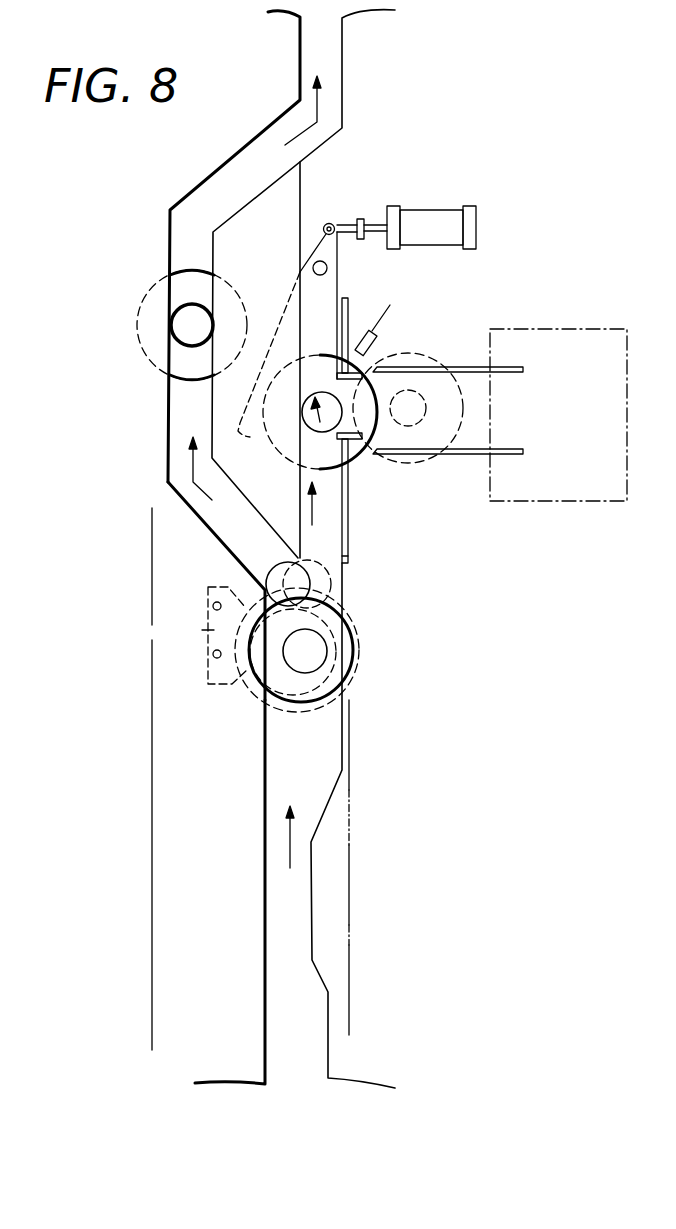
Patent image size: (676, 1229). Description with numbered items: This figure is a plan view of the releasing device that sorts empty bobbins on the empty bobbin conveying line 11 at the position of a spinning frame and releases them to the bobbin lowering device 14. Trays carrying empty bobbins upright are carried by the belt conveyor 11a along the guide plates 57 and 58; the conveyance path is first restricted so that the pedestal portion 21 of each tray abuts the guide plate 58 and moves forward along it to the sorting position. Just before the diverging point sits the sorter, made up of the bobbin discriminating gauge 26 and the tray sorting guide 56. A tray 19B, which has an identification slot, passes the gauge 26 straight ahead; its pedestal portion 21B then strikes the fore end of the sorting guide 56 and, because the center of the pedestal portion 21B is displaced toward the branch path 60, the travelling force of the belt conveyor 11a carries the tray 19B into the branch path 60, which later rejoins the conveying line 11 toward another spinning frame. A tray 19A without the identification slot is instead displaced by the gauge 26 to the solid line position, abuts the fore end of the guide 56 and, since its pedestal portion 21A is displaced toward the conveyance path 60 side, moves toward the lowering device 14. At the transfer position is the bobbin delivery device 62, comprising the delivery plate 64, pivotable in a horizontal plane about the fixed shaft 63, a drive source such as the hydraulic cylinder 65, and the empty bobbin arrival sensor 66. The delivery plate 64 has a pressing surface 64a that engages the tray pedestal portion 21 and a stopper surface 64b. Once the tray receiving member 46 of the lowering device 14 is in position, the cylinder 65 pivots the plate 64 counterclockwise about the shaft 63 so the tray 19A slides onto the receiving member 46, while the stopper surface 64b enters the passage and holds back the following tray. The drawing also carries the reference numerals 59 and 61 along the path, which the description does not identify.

The empty bobbin conveying line 11 is at (330, 66).
The belt conveyor 11a is at (352, 840).
The bobbin lowering device 14 is at (527, 330).
The tray 19A is at (372, 455).
The tray 19B is at (186, 272).
The pedestal portion 21 is at (320, 422).
The pedestal portion 21A is at (328, 578).
The pedestal portion 21B is at (272, 576).
The discriminating gauge 26 is at (210, 630).
The tray receiving member 46 is at (420, 458).
The tray sorting guide 56 is at (343, 548).
The guide plate 57 is at (329, 1016).
The guide plate 58 is at (265, 1022).
The guide wall 59 is at (318, 903).
The branch path 60 is at (223, 512).
The guide plate 61 is at (334, 510).
The bobbin delivery device 62 is at (354, 280).
The fixed shaft 63 is at (327, 266).
The delivery plate 64 is at (346, 300).
The pressing surface 64a is at (358, 442).
The stopper surface 64b is at (246, 437).
The hydraulic cylinder 65 is at (432, 216).
The empty bobbin arrival sensor 66 is at (370, 344).